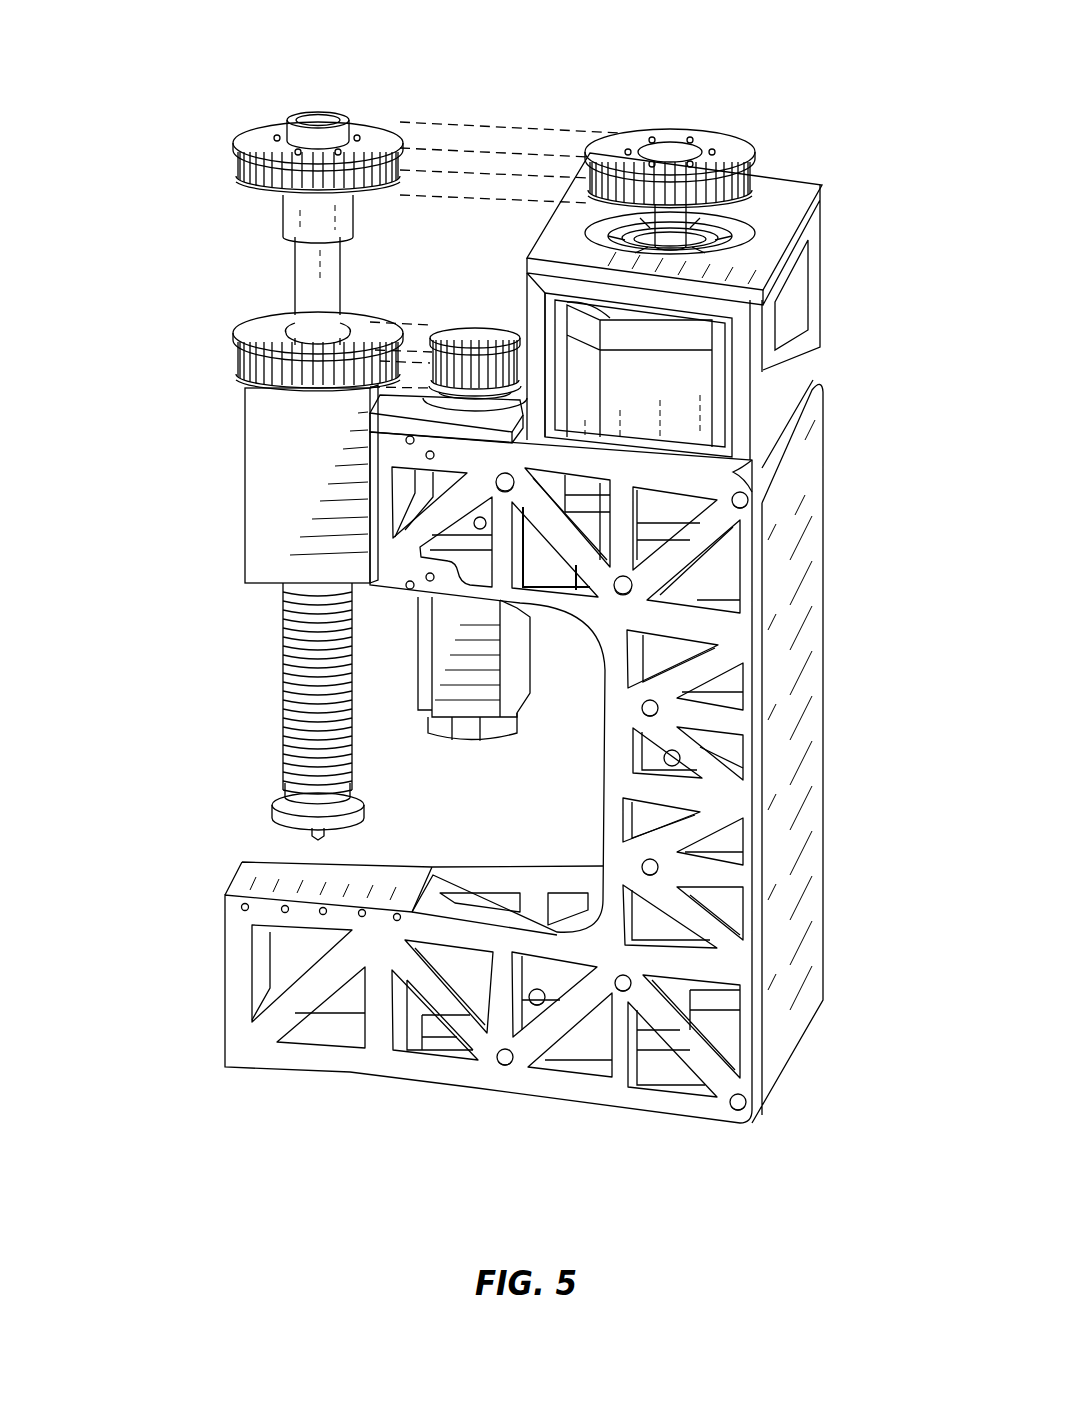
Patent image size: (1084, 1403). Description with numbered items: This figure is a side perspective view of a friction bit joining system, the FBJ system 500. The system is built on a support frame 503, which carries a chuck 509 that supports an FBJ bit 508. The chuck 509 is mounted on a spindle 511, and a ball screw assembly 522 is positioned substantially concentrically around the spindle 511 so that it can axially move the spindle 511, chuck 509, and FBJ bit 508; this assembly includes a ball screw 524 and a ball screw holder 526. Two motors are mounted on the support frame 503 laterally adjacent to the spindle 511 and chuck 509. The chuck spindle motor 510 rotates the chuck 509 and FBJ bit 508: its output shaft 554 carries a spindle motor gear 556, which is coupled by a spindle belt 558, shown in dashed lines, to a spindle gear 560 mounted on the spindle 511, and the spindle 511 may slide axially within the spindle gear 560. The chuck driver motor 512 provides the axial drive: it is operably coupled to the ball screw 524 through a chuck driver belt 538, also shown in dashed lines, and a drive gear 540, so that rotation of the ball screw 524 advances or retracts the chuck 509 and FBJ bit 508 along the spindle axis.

The FBJ system 500 is at (148, 80).
The support frame 503 is at (823, 580).
The FBJ bit 508 is at (305, 816).
The chuck 509 is at (280, 803).
The chuck spindle motor 510 is at (696, 408).
The spindle 511 is at (297, 283).
The chuck driver motor 512 is at (493, 755).
The ball screw assembly 522 is at (212, 492).
The ball screw 524 is at (283, 700).
The ball screw holder 526 is at (245, 558).
The chuck driver belt 538 is at (412, 322).
The drive gear 540 is at (255, 333).
The output shaft 554 is at (700, 218).
The spindle motor gear 556 is at (722, 146).
The spindle belt 558 is at (548, 133).
The spindle gear 560 is at (363, 122).